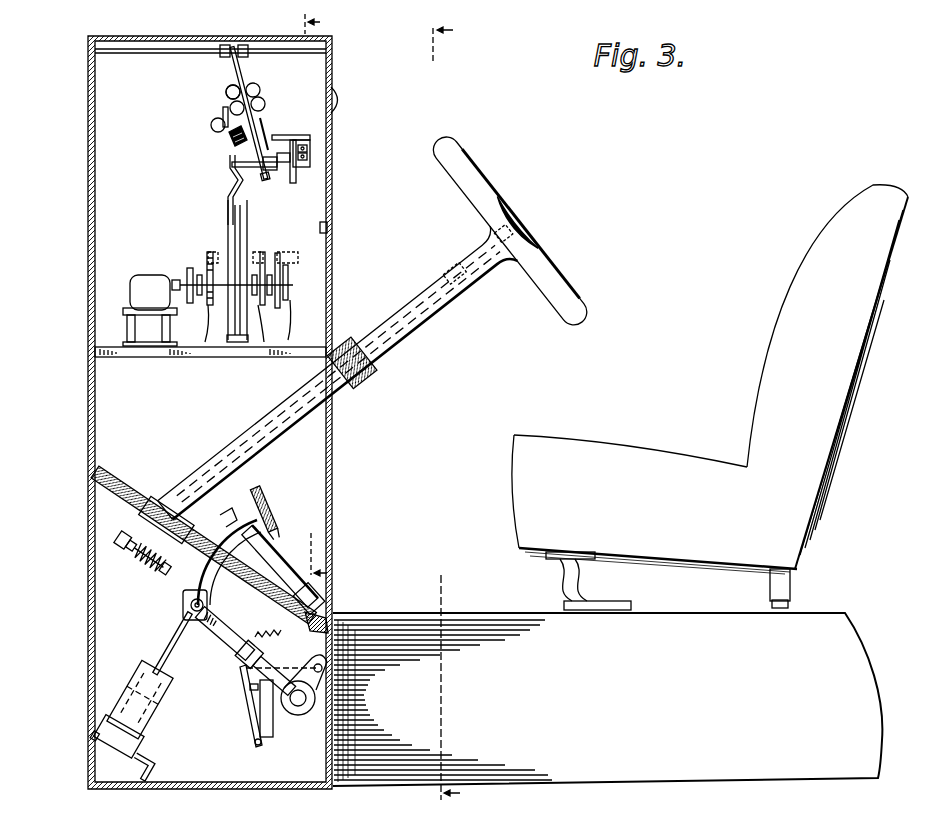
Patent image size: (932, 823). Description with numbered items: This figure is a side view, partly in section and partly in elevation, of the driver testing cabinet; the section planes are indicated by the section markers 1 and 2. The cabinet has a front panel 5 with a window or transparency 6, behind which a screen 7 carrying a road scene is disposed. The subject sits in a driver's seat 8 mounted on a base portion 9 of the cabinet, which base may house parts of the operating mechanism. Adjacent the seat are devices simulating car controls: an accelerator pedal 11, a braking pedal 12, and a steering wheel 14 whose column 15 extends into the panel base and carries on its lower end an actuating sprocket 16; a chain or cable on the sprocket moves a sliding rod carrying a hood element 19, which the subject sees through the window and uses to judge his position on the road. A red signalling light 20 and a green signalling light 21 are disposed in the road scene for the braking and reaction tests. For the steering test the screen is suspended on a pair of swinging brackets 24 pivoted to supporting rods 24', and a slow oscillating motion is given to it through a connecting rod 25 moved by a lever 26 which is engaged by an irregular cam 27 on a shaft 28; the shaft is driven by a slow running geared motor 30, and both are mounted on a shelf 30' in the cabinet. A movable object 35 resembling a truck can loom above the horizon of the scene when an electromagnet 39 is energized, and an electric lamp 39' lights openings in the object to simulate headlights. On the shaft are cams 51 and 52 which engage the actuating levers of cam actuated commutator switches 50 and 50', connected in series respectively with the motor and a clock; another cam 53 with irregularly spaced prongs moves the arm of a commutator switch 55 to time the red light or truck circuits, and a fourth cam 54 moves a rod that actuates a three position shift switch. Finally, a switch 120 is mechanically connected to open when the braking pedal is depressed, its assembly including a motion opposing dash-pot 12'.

The section line 1- 1 is at (458, 413).
The section line 2- 2 is at (322, 293).
The front panel 5 is at (86, 272).
The window 6 is at (331, 83).
The screen 7 is at (261, 133).
The driver's seat 8 is at (870, 348).
The base portion 9 is at (822, 610).
The accelerator pedal 11 is at (277, 548).
The braking pedal 12 is at (280, 509).
The dash-pot 12' is at (137, 691).
The steering wheel 14 is at (568, 274).
The column 15 is at (385, 357).
The actuating sprocket 16 is at (143, 566).
The hood element 19 is at (311, 138).
The red signalling light 20 is at (256, 89).
The green signalling light 21 is at (260, 103).
The swinging brackets 24 is at (223, 113).
The supporting rods 24' is at (210, 66).
The connecting rod 25 is at (231, 169).
The lever 26 is at (247, 207).
The irregular cam 27 is at (246, 232).
The shaft 28 is at (194, 265).
The geared motor 30 is at (143, 295).
The shelf 30' is at (150, 365).
The movable object 35 is at (228, 106).
The electromagnet 39 is at (214, 141).
The electric lamp 39' is at (198, 119).
The automatic control switch 50 is at (248, 266).
The automatic control switch 50' is at (328, 259).
The cam 51 is at (257, 308).
The cam 52 is at (290, 312).
The cam 53 is at (207, 305).
The fourth cam 54 is at (188, 275).
The commutator switch 55 is at (212, 250).
The switch 120 is at (243, 700).